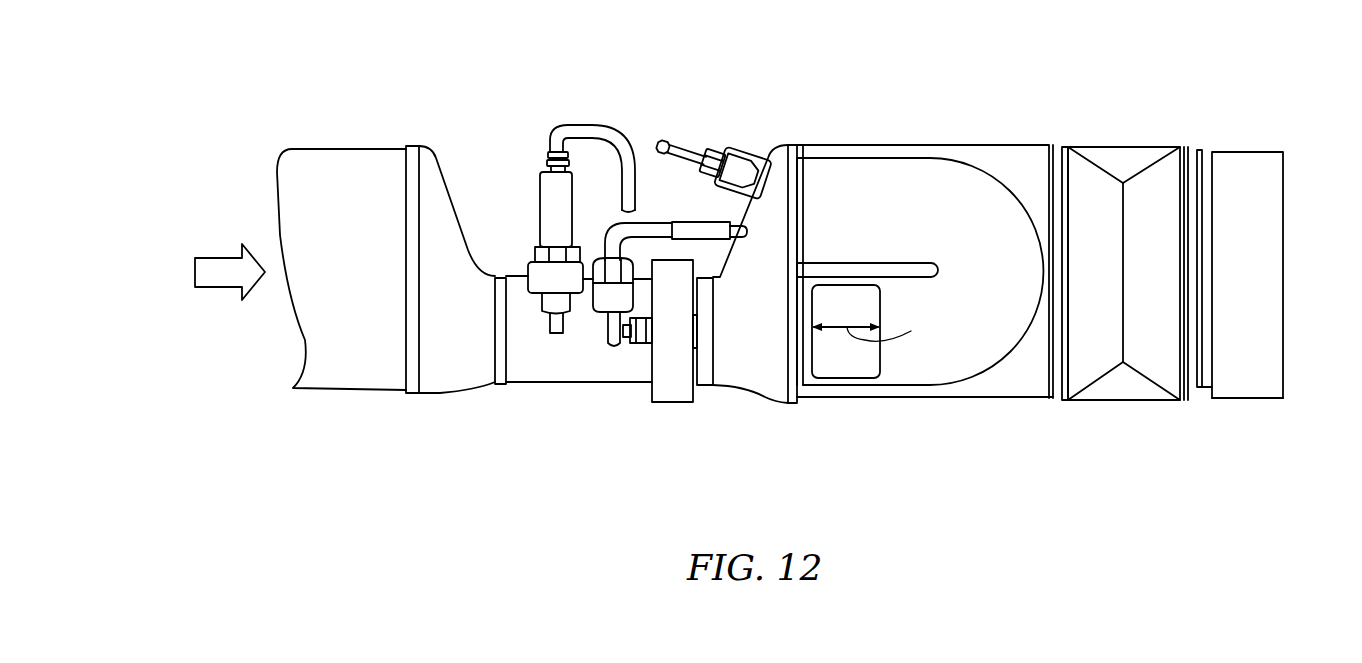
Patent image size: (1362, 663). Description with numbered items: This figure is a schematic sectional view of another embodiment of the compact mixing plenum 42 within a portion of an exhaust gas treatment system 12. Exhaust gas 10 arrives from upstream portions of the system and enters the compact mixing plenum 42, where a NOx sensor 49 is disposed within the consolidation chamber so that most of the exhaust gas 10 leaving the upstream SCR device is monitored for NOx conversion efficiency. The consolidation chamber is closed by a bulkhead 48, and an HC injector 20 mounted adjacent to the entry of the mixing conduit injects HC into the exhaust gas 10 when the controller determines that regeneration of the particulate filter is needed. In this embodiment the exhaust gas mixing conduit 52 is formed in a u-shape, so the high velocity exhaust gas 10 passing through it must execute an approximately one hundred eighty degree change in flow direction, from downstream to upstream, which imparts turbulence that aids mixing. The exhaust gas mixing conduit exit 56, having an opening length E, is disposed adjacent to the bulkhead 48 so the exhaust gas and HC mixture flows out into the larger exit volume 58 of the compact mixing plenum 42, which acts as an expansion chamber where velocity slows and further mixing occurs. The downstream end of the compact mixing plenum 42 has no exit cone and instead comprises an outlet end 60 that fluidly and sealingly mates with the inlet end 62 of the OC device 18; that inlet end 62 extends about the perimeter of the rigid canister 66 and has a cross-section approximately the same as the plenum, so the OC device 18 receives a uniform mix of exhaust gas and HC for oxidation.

The exhaust gas 10 is at (222, 257).
The exhaust gas treatment system 12 is at (336, 108).
The OC device 18 is at (1264, 402).
The HC injector 20 is at (547, 323).
The compact mixing plenum 42 is at (914, 138).
The bulkhead 48 is at (690, 147).
The NOx sensor 49 is at (623, 147).
The exhaust gas mixing conduit 52 is at (990, 164).
The exhaust gas mixing conduit exit 56 is at (820, 353).
The exit volume 58 is at (918, 393).
The outlet end 60 is at (1202, 387).
The inlet end 62 is at (1212, 182).
The rigid canister 66 is at (1245, 150).